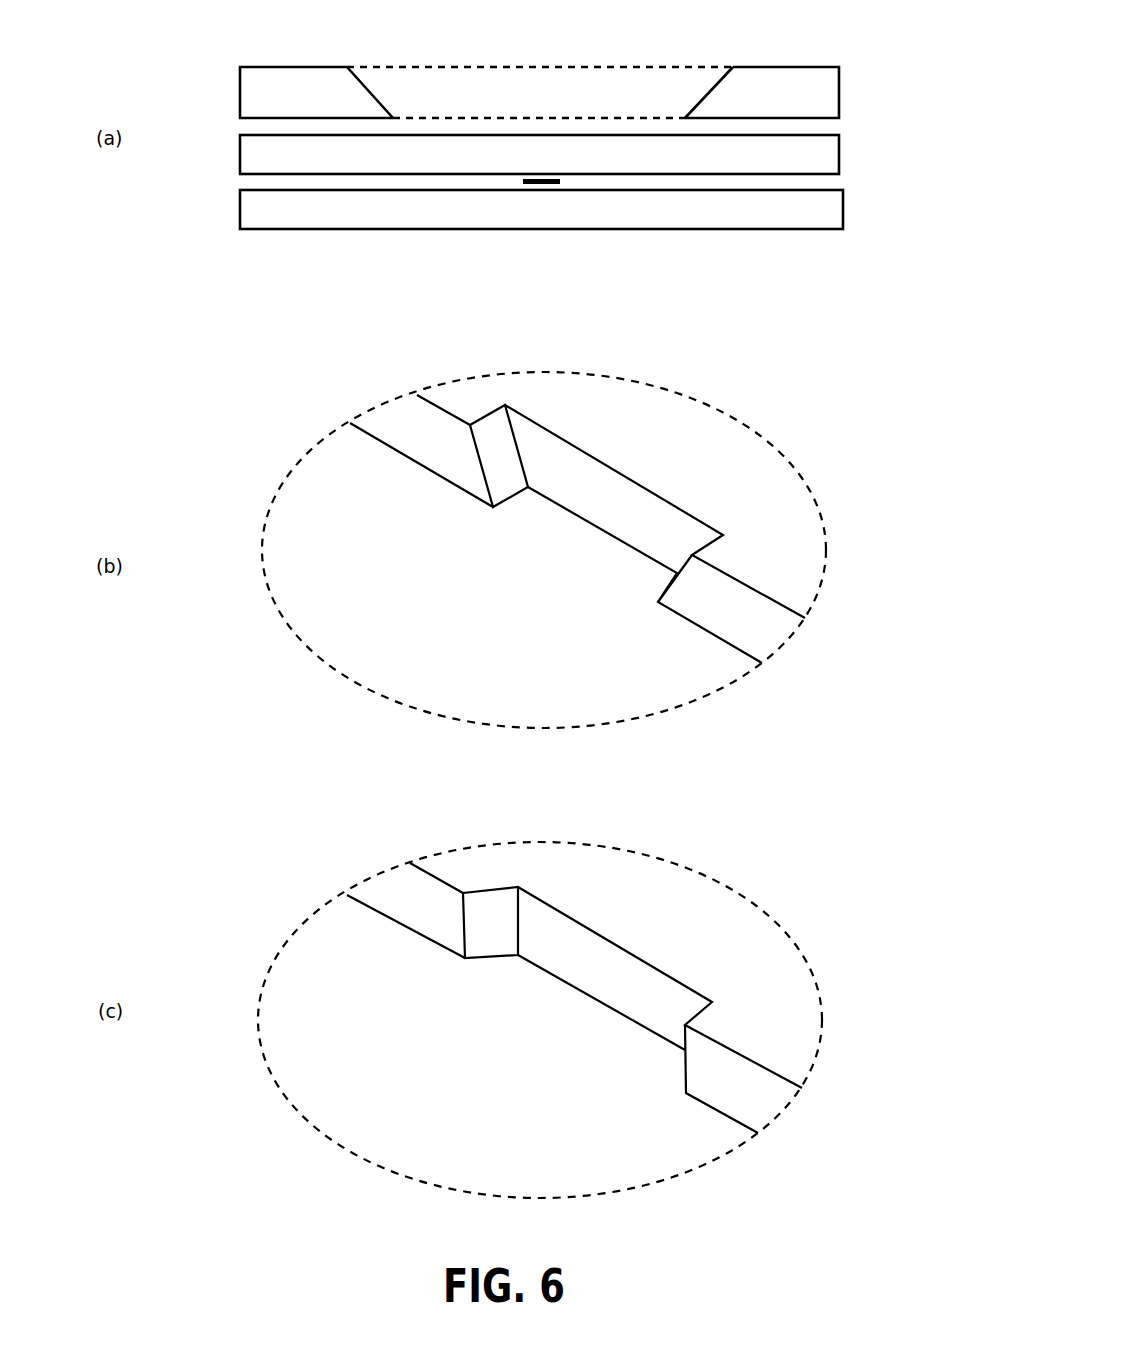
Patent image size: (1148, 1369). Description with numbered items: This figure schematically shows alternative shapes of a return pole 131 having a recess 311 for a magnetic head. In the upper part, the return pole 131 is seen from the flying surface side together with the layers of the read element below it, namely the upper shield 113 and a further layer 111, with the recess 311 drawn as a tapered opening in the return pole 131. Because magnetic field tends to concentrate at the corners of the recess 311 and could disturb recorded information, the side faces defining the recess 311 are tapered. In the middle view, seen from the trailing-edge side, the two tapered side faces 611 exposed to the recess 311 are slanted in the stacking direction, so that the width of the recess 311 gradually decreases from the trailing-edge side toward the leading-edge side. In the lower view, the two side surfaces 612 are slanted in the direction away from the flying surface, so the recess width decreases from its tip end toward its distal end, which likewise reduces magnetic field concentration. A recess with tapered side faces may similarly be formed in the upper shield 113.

The return pole 131 is at (839, 82).
The recess 311 is at (702, 90).
The upper shield 113 is at (839, 152).
The lower substrate 111 is at (843, 214).
The tapered side faces 611 is at (492, 447).
The side surfaces 612 is at (478, 928).